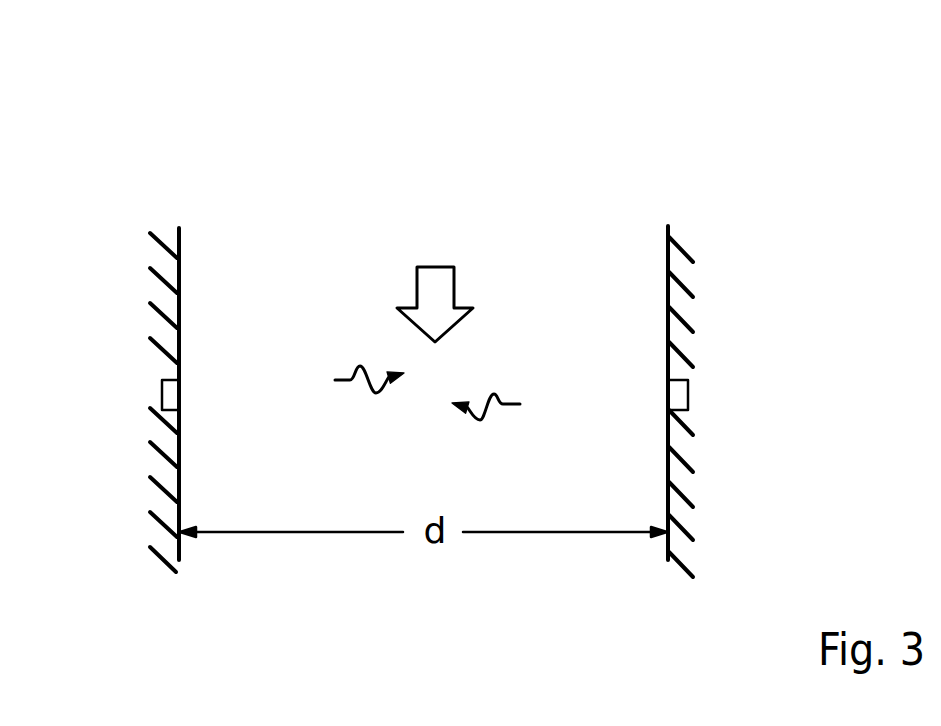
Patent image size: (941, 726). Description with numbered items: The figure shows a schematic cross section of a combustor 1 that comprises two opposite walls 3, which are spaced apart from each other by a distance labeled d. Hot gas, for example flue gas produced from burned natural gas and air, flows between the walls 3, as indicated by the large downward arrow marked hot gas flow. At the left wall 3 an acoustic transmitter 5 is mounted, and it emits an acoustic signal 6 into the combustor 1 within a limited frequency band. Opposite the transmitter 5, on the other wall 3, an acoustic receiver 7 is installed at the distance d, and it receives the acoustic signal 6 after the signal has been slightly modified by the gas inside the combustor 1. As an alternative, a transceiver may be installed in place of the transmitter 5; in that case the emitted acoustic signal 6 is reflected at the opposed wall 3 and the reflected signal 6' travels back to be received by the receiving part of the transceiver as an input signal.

The combustor 1 is at (626, 131).
The wall 3 is at (179, 298).
The acoustic transmitter 5 is at (146, 391).
The acoustic receiver 7 is at (704, 388).
The acoustic signal 6 is at (336, 497).
The reflected signal 6' is at (518, 511).